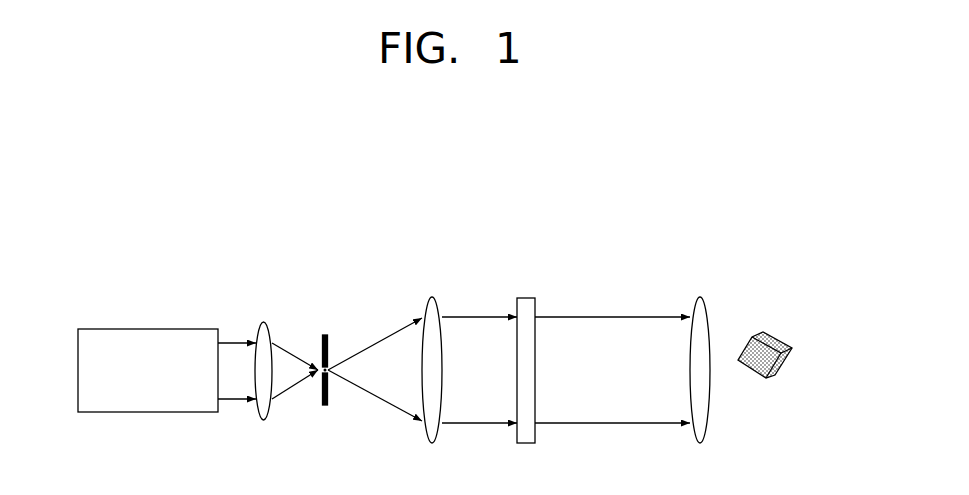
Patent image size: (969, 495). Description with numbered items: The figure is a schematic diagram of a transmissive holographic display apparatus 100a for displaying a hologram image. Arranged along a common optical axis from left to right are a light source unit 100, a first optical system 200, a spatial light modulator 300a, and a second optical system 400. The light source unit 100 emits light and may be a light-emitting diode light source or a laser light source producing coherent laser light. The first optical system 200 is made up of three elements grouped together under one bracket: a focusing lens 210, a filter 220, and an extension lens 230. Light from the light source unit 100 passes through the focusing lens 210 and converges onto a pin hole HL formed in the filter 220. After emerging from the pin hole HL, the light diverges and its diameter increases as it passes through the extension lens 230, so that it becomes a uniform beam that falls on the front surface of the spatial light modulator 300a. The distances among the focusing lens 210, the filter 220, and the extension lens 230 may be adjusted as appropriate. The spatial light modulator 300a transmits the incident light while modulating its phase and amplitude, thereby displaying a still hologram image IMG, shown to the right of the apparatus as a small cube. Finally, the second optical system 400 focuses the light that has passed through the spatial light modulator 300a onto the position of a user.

The transmissive holographic display apparatus 100a is at (627, 202).
The light source unit 100 is at (148, 328).
The first optical system 200 is at (453, 234).
The focusing lens 210 is at (263, 322).
The filter 220 is at (324, 335).
The extension lens 230 is at (432, 297).
The spatial light modulator 300a is at (525, 297).
The second optical system 400 is at (700, 297).
The pin hole HL is at (334, 384).
The hologram image IMG is at (780, 331).